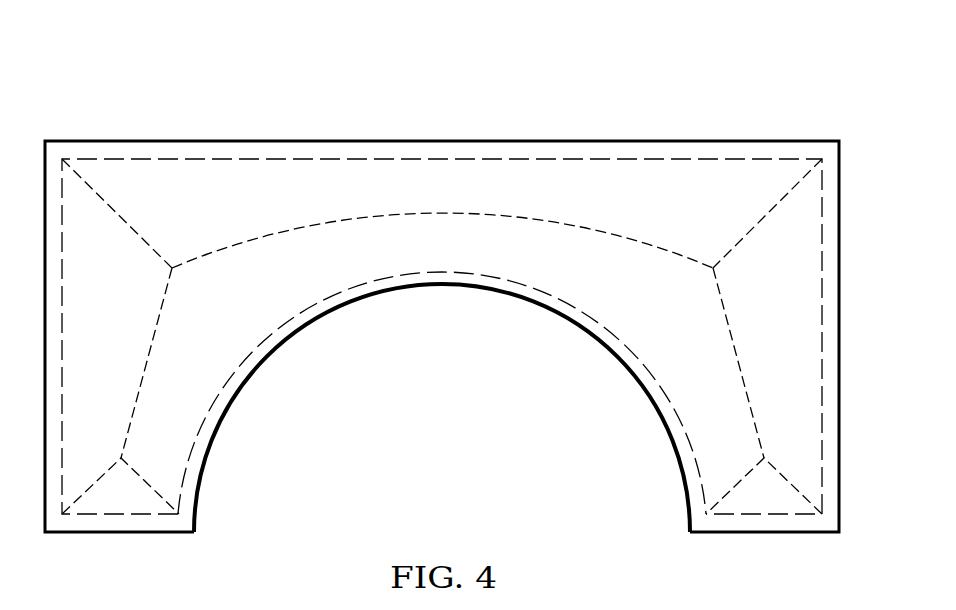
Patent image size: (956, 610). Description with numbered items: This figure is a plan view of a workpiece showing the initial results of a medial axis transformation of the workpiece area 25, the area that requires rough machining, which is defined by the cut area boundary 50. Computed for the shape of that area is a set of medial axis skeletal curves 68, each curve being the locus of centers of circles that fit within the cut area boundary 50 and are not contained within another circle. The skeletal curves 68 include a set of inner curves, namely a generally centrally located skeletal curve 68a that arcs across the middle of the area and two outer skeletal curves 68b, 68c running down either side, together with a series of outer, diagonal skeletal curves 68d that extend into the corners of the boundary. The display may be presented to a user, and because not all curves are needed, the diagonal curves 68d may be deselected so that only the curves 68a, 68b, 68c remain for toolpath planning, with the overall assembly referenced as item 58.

The airbag door assembly 58 is at (784, 63).
The cut area boundary 50 is at (177, 151).
The workpiece area 25 is at (592, 172).
The medial axis skeletal curves 68 is at (616, 216).
The generally centrally located skeletal curve 68a is at (276, 232).
The outer skeletal curve 68b is at (142, 350).
The outer skeletal curve 68c is at (740, 350).
The outer diagonal skeletal curves 68d is at (131, 226).